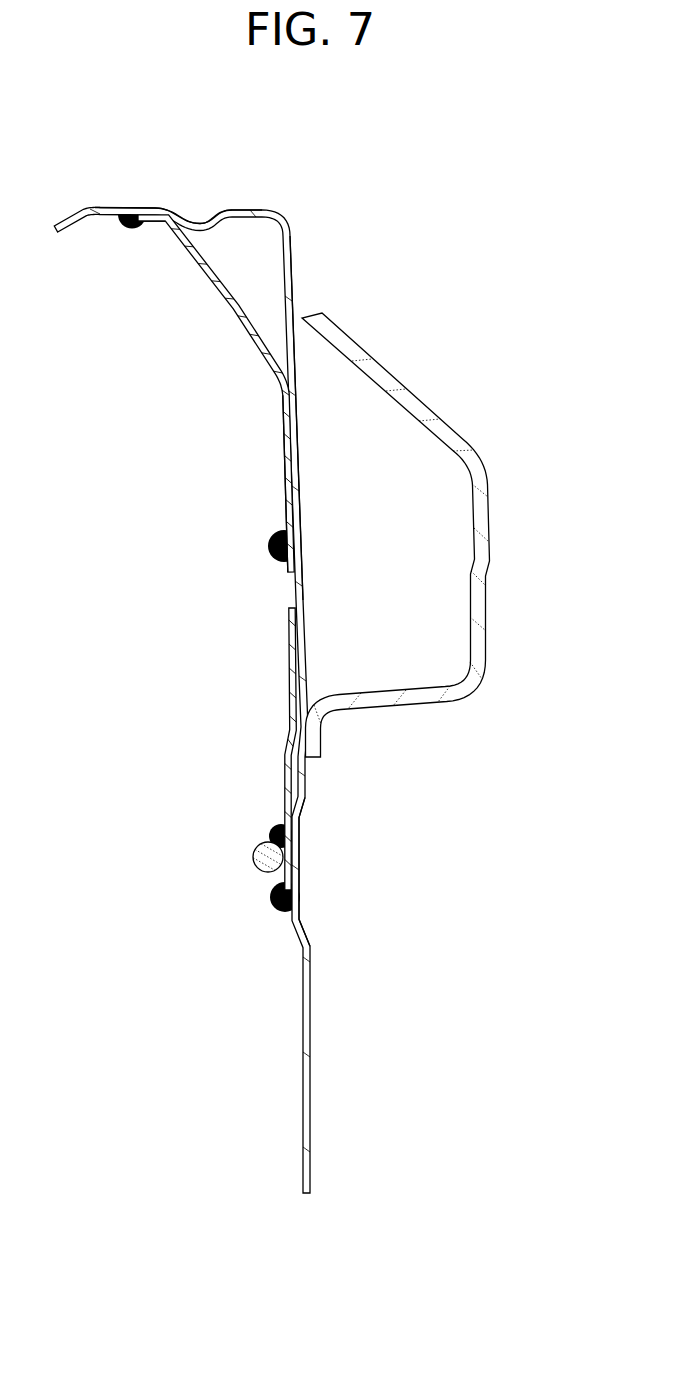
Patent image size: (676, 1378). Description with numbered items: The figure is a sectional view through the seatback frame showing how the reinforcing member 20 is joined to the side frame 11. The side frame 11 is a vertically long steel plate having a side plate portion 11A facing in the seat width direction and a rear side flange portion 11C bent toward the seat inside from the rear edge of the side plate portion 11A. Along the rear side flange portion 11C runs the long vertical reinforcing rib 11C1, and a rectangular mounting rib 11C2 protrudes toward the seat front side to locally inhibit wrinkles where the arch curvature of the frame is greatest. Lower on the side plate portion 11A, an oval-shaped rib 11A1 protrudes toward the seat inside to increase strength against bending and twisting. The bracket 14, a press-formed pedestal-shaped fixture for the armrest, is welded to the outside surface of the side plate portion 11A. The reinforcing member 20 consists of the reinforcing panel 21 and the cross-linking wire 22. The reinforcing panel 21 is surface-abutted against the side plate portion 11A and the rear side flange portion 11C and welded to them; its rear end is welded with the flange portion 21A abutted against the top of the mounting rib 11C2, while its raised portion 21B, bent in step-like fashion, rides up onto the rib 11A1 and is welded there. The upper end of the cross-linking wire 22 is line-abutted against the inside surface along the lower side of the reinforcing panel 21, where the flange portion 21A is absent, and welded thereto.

The side frame 11 is at (284, 215).
The side plate portion 11A is at (290, 272).
The rib 11A1 is at (300, 848).
The rear side flange portion 11C is at (250, 208).
The reinforcing rib 11C1 is at (202, 223).
The mounting rib 11C2 is at (128, 207).
The bracket 14 is at (458, 428).
The reinforcing member 20 is at (278, 443).
The reinforcing panel 21 is at (230, 308).
The flange portion 21A is at (157, 222).
The raised portion 21B is at (285, 798).
The cross-linking wire 22 is at (250, 856).